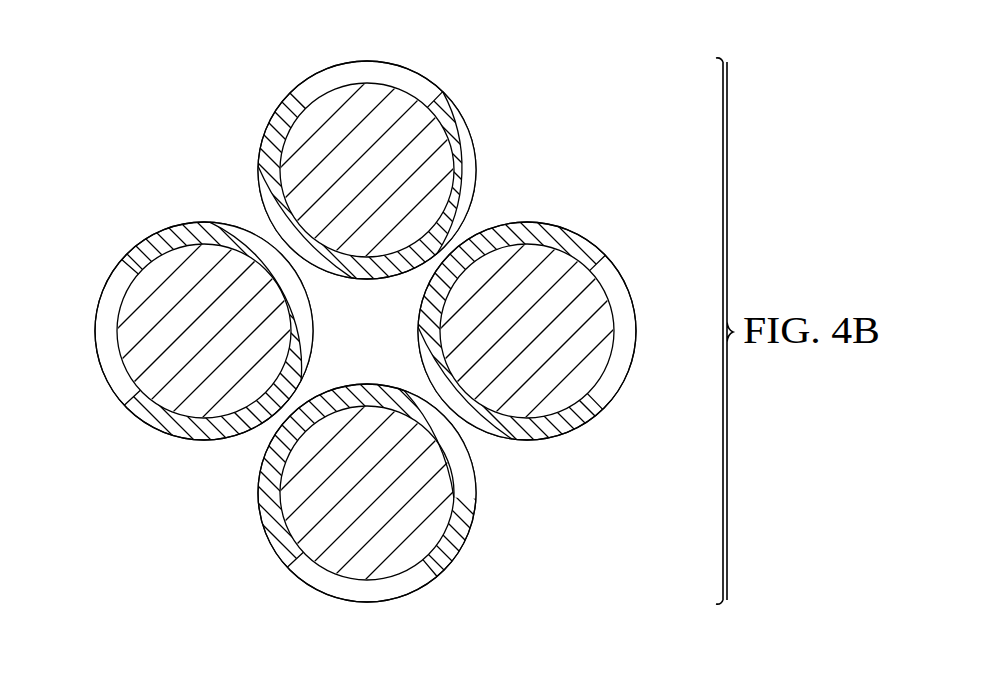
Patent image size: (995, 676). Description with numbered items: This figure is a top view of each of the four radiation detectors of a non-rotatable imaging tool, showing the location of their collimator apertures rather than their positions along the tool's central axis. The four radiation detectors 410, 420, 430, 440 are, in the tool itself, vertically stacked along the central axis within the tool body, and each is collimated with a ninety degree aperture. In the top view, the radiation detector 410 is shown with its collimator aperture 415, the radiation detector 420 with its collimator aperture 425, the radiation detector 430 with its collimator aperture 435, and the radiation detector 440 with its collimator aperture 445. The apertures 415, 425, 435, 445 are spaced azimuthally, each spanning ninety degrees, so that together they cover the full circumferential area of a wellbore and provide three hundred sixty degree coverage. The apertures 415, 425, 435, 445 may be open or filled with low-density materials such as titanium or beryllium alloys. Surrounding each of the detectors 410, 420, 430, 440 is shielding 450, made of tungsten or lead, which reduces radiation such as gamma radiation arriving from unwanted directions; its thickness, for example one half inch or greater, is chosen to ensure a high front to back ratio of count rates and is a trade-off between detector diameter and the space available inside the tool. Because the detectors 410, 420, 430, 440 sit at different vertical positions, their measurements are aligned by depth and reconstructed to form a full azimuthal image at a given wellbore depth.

The radiation detector 410 is at (557, 345).
The collimator aperture 415 is at (628, 333).
The radiation detector 420 is at (386, 184).
The collimator aperture 425 is at (312, 88).
The radiation detector 430 is at (224, 345).
The collimator aperture 435 is at (102, 330).
The radiation detector 440 is at (385, 493).
The collimator aperture 445 is at (343, 590).
The shielding 450 is at (457, 127).